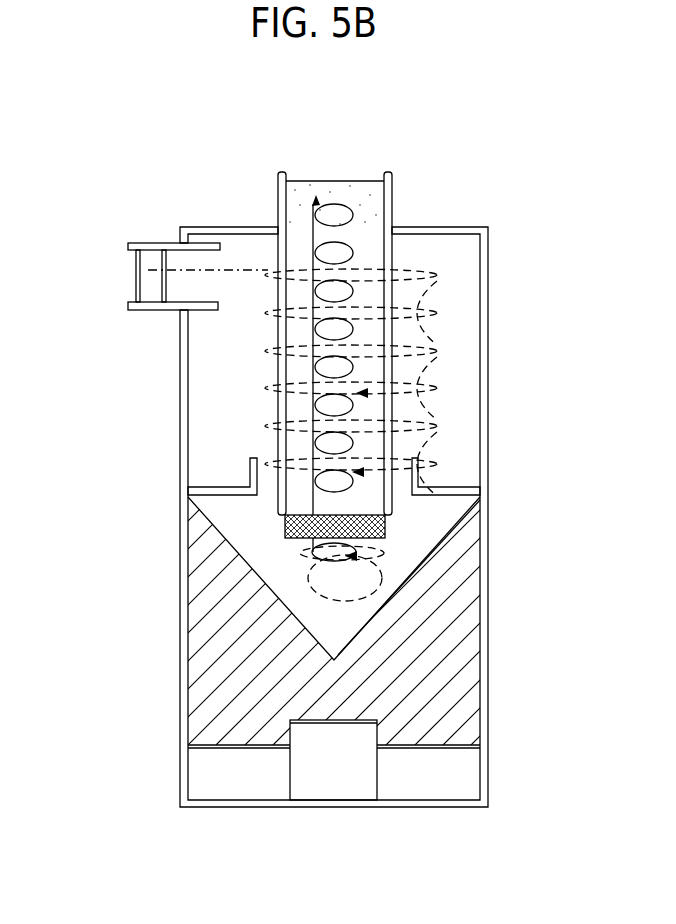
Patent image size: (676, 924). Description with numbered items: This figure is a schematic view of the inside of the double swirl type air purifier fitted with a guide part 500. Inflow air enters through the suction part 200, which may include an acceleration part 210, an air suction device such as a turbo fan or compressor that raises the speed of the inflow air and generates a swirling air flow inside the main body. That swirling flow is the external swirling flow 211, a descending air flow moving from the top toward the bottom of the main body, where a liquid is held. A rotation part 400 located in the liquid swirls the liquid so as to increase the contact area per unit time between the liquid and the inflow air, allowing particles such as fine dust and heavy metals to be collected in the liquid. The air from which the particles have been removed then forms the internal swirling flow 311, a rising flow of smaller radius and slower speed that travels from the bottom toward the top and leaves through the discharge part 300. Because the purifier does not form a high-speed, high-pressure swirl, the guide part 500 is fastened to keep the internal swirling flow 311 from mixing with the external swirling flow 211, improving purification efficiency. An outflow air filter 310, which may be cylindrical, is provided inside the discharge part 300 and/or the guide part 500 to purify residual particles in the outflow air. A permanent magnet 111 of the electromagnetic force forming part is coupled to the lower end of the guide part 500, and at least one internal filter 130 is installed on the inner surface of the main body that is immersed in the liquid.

The permanent magnet 111 is at (393, 525).
The internal filter 130 is at (223, 487).
The suction part 200 is at (132, 234).
The acceleration part 210 is at (148, 275).
The external swirling flow 211 is at (413, 403).
The discharge part 300 is at (335, 294).
The outflow air filter 310 is at (366, 177).
The internal swirling flow 311 is at (320, 407).
The rotation part 400 is at (337, 737).
The guide part 500 is at (417, 310).